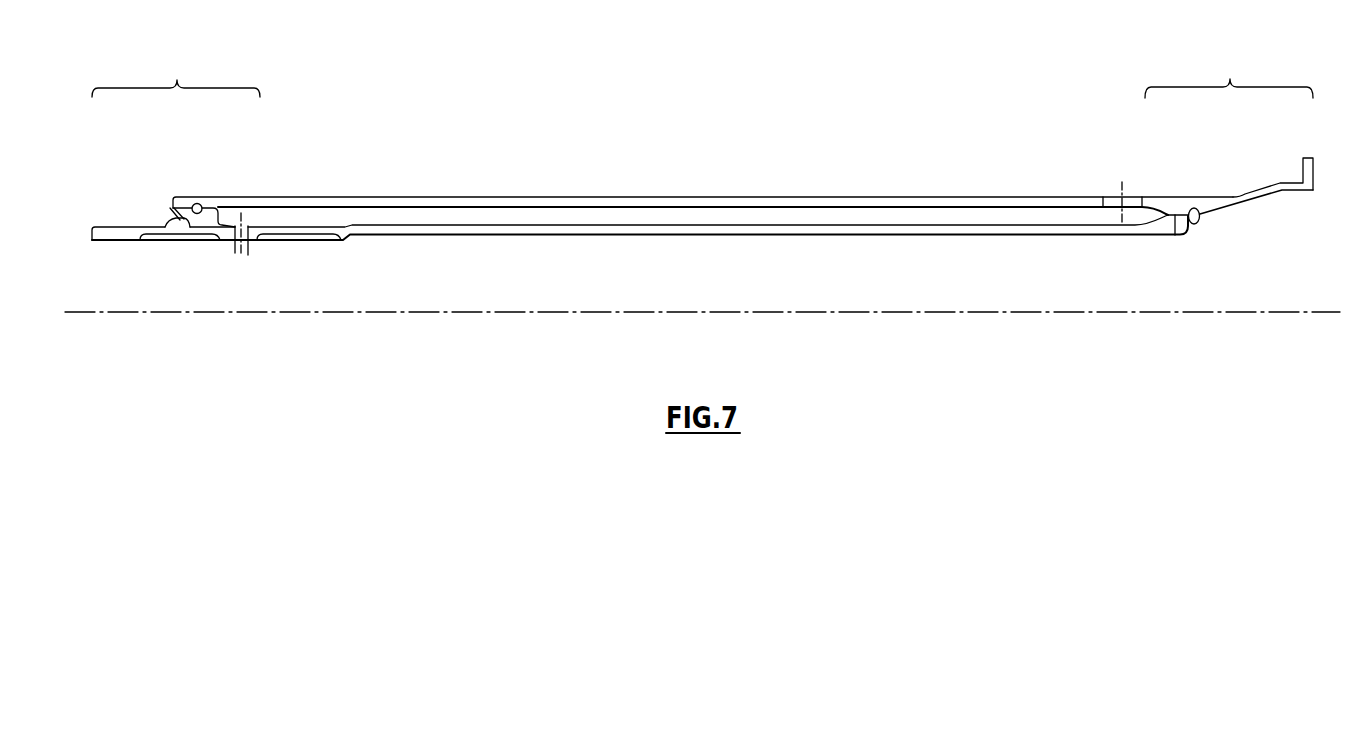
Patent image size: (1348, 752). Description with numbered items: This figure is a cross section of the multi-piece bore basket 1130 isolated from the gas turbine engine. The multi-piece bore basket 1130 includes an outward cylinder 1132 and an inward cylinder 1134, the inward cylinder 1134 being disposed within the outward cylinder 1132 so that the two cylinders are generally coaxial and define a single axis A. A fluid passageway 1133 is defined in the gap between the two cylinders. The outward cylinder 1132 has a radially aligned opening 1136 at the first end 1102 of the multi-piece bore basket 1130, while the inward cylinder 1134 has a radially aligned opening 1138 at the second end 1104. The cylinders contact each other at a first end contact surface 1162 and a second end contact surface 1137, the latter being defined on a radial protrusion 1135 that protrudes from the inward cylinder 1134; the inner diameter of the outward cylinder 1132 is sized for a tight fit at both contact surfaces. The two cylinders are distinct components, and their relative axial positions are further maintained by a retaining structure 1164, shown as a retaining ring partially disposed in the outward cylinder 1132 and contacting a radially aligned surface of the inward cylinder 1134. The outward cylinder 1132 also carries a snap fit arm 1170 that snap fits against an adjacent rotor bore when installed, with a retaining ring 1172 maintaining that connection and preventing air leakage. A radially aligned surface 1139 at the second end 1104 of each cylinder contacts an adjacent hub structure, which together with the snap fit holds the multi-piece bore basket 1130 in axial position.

The first end 1102 is at (1229, 72).
The second end 1104 is at (176, 73).
The multi-piece bore basket 1130 is at (305, 122).
The outward cylinder 1132 is at (542, 203).
The fluid passageway 1133 is at (643, 212).
The inward cylinder 1134 is at (447, 231).
The radial protrusion 1135 is at (177, 220).
The radially aligned opening 1136 is at (1128, 205).
The second end contact surface 1137 is at (195, 203).
The radially aligned opening 1138 is at (248, 255).
The radially aligned surface 1139 is at (172, 222).
The first end contact surface 1162 is at (1175, 236).
The retaining structure 1164 is at (1197, 225).
The snap fit arm 1170 is at (1305, 160).
The retaining ring 1172 is at (1280, 200).
The axis A is at (669, 312).